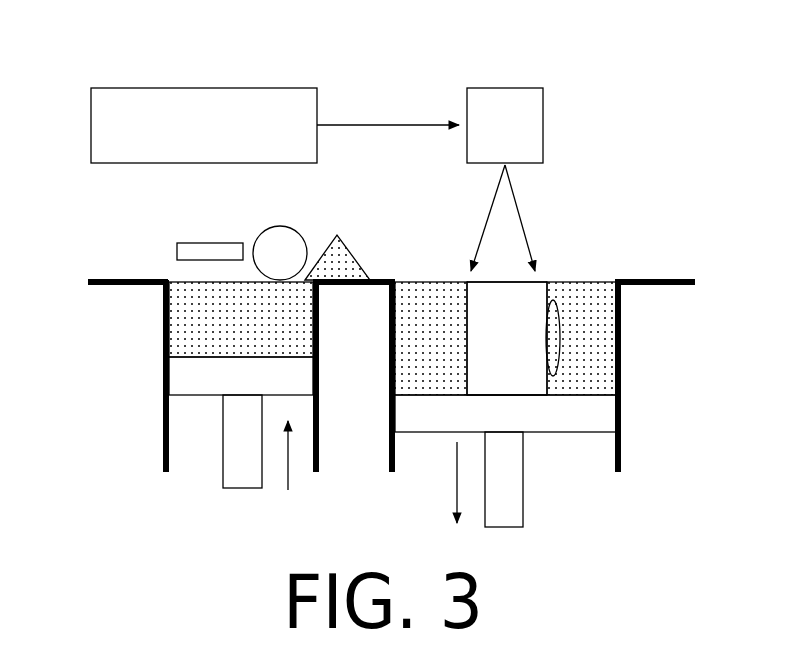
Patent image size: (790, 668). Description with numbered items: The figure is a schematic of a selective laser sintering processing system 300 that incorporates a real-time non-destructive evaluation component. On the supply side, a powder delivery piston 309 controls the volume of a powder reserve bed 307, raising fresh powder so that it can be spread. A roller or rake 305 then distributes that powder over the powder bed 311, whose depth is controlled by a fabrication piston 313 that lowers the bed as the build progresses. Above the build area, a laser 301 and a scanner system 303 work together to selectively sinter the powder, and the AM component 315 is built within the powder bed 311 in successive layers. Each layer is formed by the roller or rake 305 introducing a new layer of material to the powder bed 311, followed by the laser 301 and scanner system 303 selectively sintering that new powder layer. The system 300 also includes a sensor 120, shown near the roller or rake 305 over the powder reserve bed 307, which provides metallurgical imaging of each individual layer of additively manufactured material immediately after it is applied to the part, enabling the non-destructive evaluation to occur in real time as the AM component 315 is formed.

The SLS processing system 300 is at (124, 64).
The laser 301 is at (181, 141).
The scanner system 303 is at (528, 141).
The sensor 120 is at (190, 247).
The roller or rake 305 is at (280, 228).
The powder reserve bed 307 is at (187, 340).
The powder delivery piston 309 is at (187, 383).
The powder bed 311 is at (598, 355).
The fabrication piston 313 is at (598, 413).
The AM component 315 is at (490, 300).